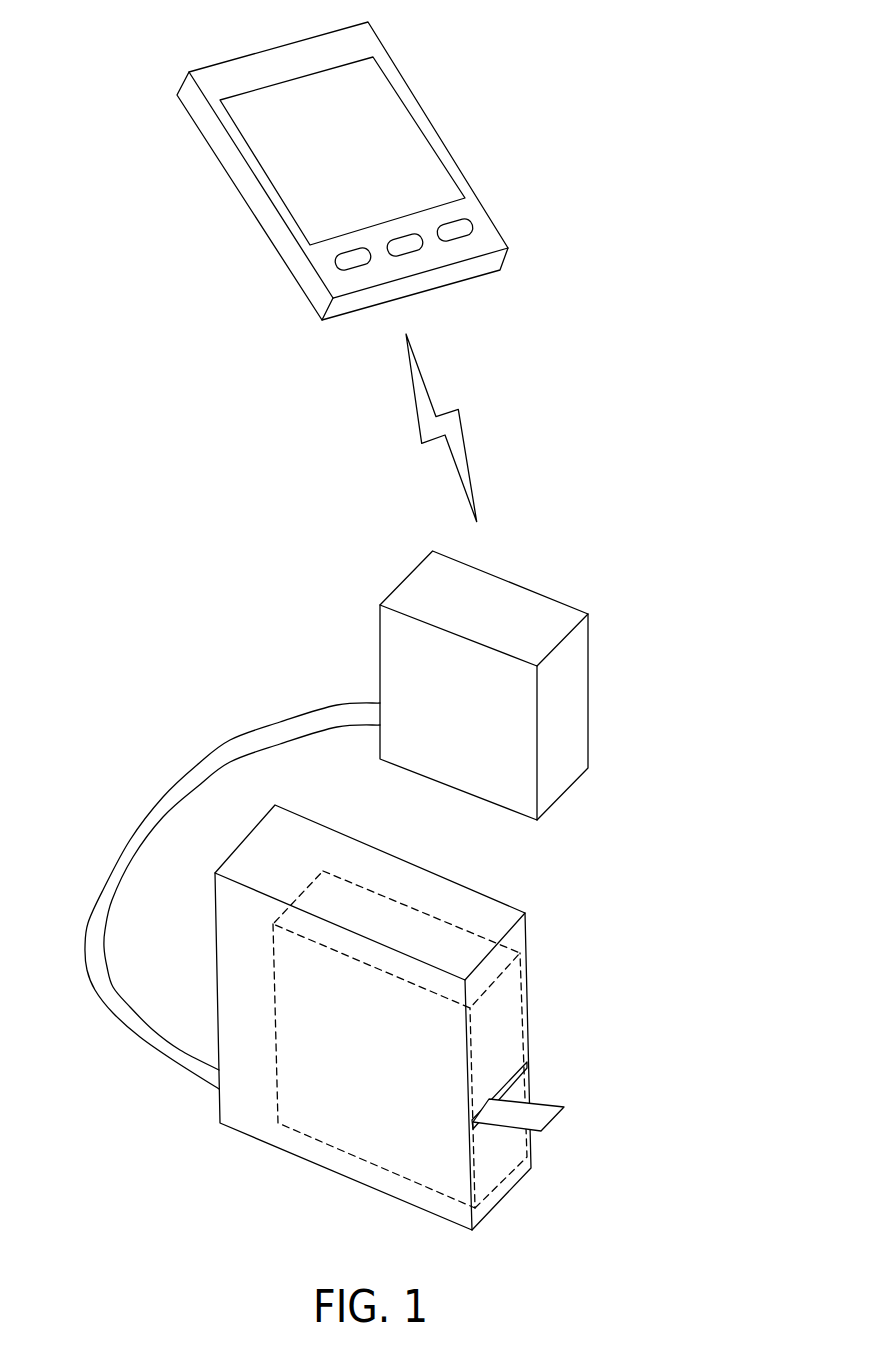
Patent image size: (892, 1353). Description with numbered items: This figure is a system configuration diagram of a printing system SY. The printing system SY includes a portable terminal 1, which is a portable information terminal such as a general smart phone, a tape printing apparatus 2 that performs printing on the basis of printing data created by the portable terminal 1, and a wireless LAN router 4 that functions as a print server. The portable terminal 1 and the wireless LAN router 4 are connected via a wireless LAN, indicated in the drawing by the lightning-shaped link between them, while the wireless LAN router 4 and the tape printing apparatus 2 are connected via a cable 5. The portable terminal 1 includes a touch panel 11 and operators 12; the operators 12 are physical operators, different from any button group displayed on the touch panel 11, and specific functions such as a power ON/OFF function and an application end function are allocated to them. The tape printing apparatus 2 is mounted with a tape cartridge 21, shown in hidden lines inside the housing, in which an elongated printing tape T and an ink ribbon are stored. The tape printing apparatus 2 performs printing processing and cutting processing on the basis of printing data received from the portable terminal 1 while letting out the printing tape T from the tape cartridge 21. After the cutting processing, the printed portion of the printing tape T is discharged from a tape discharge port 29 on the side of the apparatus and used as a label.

The printing system SY is at (660, 33).
The portable terminal 1 is at (435, 64).
The touch panel 11 is at (412, 143).
The operators 12 is at (492, 222).
The wireless LAN router 4 is at (520, 595).
The cable 5 is at (165, 800).
The tape printing apparatus 2 is at (567, 912).
The tape cartridge 21 is at (420, 911).
The tape discharge port 29 is at (513, 1068).
The printing tape T is at (543, 1100).